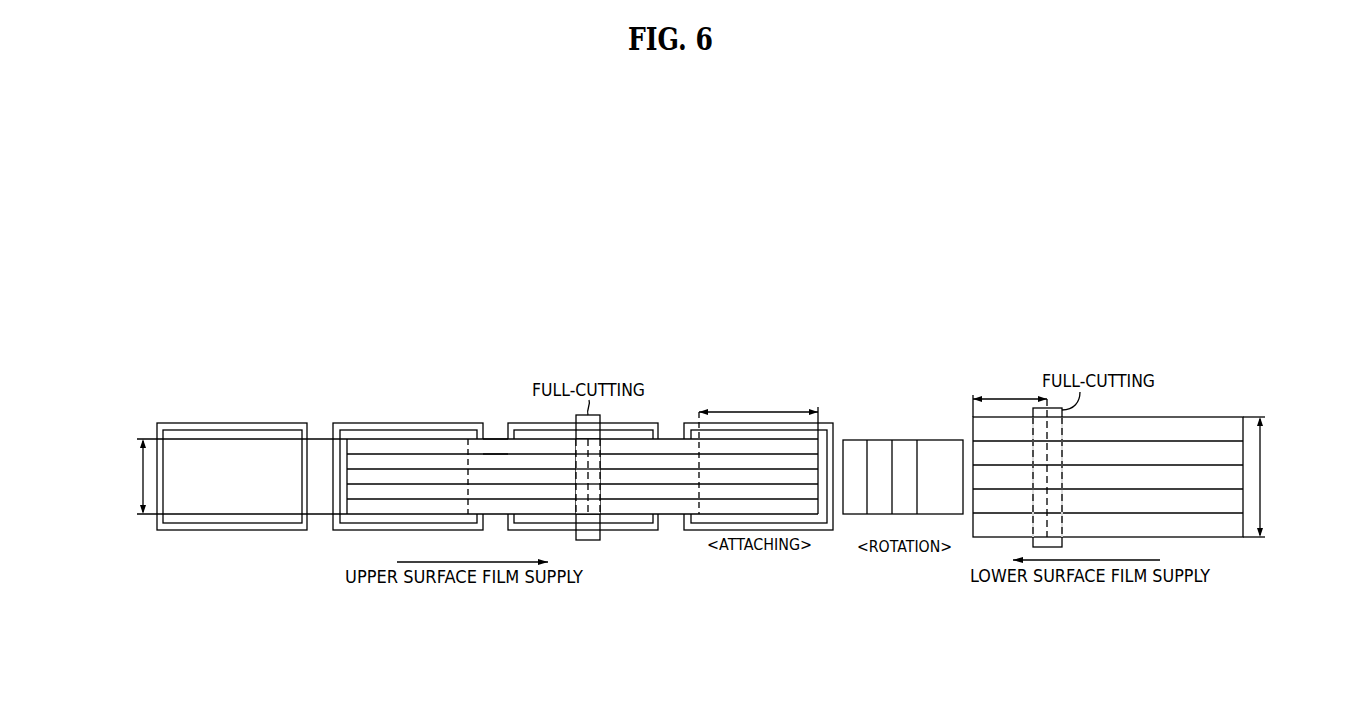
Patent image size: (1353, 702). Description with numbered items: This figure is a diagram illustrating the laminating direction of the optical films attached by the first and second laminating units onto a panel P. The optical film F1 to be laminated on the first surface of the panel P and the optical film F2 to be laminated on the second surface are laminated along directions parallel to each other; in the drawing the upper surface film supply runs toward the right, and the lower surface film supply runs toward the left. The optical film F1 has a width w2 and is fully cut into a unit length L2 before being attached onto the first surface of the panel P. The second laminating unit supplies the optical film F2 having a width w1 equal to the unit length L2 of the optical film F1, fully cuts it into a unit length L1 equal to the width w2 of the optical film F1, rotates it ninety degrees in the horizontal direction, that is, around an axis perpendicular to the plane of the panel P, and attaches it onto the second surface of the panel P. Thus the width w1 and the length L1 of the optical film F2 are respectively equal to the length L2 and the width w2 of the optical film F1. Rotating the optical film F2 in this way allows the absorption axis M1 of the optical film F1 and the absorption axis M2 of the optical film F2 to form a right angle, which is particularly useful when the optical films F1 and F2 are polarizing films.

The panel P is at (267, 423).
The optical film F1 is at (389, 447).
The absorption axis M1 is at (493, 455).
The optical film F2 is at (928, 448).
The absorption axis M2 is at (867, 455).
The length L1 is at (1010, 397).
The length L2 is at (758, 452).
The width w1 is at (1264, 477).
The width w2 is at (234, 476).